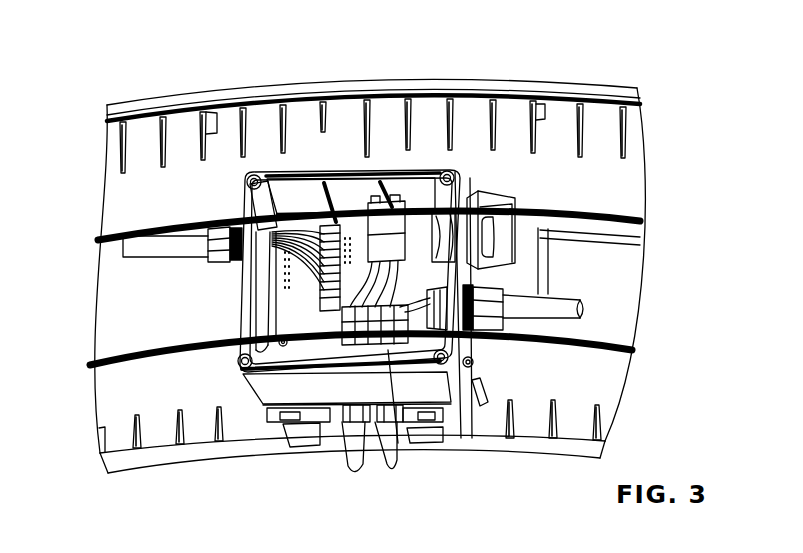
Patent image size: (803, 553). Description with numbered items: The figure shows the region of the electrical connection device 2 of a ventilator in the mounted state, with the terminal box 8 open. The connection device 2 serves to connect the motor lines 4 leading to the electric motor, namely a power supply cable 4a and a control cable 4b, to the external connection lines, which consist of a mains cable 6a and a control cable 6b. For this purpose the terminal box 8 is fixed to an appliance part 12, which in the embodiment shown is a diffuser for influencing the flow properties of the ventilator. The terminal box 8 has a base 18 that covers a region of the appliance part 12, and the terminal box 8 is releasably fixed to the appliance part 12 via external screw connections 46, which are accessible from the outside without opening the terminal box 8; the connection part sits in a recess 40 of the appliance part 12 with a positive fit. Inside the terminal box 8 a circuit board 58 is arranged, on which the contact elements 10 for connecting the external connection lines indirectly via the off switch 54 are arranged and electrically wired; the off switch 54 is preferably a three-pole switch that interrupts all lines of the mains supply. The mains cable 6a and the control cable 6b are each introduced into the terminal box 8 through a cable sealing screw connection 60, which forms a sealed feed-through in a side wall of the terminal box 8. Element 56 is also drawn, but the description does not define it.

The electrical connection device 2 is at (464, 156).
The motor lines 4 is at (358, 481).
The power supply cable 4a is at (355, 474).
The control cable 4b is at (392, 468).
The mains cable 6a is at (557, 310).
The control cable 6b is at (143, 247).
The terminal box 8 is at (298, 165).
The contact elements 10 is at (329, 320).
The appliance part 12 is at (598, 128).
The base 18 is at (398, 443).
The recess 40 is at (460, 373).
The external screw connections 46 is at (478, 357).
The off switch 54 is at (473, 203).
The retaining element 56 is at (500, 207).
The circuit board 58 is at (298, 320).
The cable sealing screw connection 60 is at (213, 240).